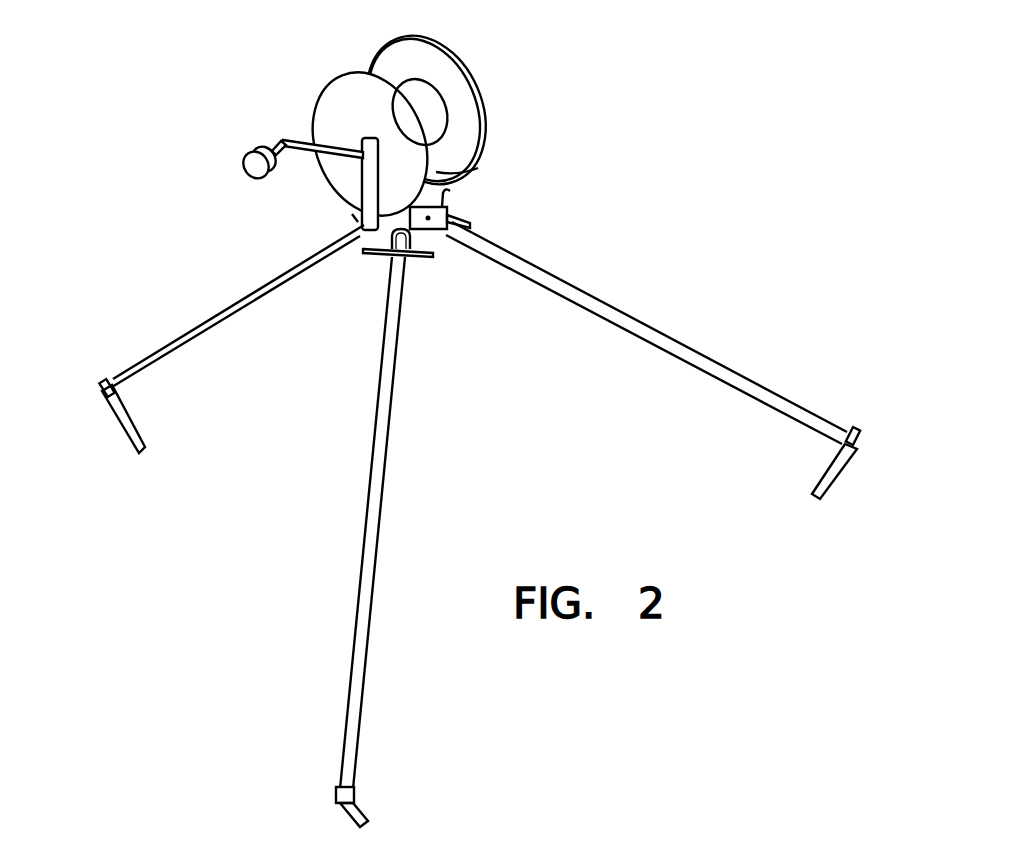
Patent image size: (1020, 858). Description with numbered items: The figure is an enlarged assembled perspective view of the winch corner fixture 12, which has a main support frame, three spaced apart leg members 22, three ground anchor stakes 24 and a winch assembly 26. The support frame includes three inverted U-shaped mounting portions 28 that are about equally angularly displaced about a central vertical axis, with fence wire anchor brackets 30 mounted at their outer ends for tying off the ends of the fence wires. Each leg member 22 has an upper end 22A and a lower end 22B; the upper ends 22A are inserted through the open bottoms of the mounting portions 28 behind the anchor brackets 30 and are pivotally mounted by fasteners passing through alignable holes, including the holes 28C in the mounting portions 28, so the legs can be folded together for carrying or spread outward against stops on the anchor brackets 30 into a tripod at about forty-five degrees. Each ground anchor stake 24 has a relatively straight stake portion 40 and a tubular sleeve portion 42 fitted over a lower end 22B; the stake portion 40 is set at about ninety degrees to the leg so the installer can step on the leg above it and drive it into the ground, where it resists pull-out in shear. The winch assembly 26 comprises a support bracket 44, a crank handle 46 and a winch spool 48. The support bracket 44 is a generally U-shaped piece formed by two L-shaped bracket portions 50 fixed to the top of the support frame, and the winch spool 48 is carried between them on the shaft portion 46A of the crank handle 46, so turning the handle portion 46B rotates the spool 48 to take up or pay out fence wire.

The winch corner fixture 12 is at (600, 79).
The leg members 22 is at (213, 330).
The upper end 22A is at (447, 220).
The lower end 22B is at (110, 382).
The ground anchor stakes 24 is at (464, 594).
The winch assembly 26 is at (238, 76).
The mounting portions 28 is at (453, 218).
The holes 28C is at (447, 222).
The fence wire anchor brackets 30 is at (453, 200).
The stake portion 40 is at (140, 436).
The tubular sleeve portion 42 is at (100, 388).
The support bracket 44 is at (367, 229).
The crank handle 46 is at (287, 142).
The shaft portion 46A is at (360, 190).
The handle portion 46B is at (272, 152).
The winch spool 48 is at (450, 63).
The L-shaped bracket portions 50 is at (478, 170).